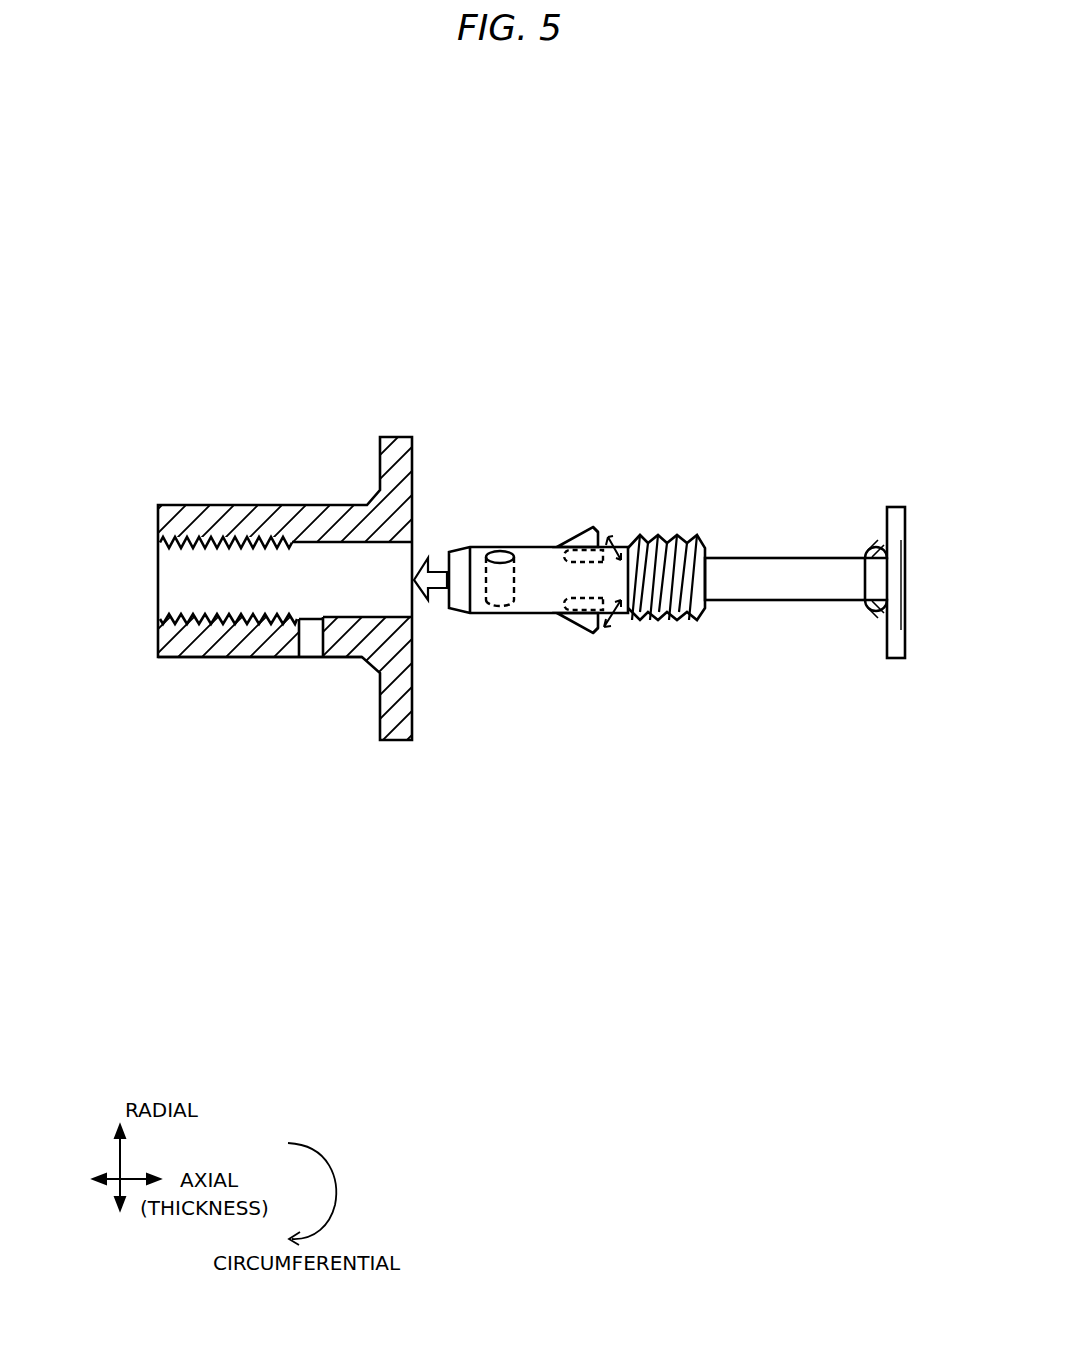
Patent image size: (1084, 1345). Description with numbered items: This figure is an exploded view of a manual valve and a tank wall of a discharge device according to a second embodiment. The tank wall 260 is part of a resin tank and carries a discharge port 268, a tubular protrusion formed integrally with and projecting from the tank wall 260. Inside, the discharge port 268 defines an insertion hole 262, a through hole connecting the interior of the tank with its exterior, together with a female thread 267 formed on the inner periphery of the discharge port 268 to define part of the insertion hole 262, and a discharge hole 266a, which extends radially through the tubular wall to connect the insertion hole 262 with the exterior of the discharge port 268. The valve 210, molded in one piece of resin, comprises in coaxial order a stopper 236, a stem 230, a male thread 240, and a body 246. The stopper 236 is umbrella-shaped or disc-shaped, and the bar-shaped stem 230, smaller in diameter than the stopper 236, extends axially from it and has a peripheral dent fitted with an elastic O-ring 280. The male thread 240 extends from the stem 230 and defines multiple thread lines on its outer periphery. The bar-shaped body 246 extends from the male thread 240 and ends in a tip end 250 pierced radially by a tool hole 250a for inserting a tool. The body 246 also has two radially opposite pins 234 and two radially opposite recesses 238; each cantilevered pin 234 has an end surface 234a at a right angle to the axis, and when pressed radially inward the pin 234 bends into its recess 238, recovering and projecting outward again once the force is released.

The valve 210 is at (666, 591).
The stem 230 is at (823, 602).
The pins 234 is at (593, 543).
The end surface 234a is at (600, 538).
The stopper 236 is at (902, 660).
The recesses 238 is at (598, 543).
The male thread 240 is at (647, 621).
The body 246 is at (540, 641).
The tip end 250 is at (487, 614).
The tool hole 250a is at (502, 604).
The tank wall 260 is at (358, 452).
The insertion hole 262 is at (180, 578).
The discharge hole 266a is at (313, 674).
The female thread 267 is at (245, 540).
The discharge port 268 is at (190, 691).
The O-ring 280 is at (867, 537).